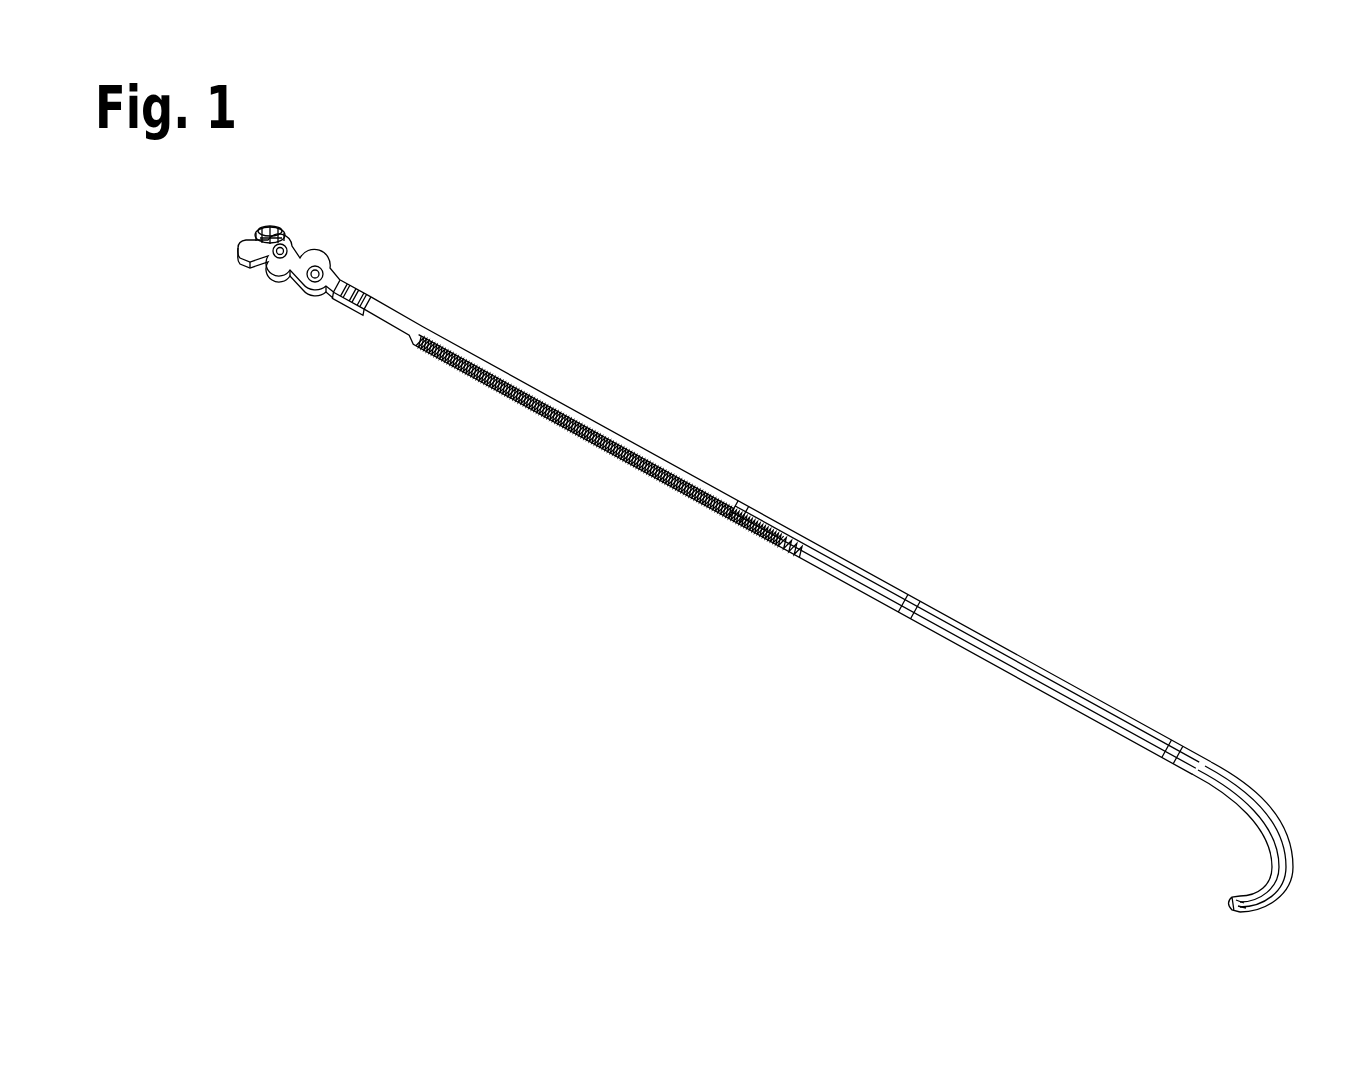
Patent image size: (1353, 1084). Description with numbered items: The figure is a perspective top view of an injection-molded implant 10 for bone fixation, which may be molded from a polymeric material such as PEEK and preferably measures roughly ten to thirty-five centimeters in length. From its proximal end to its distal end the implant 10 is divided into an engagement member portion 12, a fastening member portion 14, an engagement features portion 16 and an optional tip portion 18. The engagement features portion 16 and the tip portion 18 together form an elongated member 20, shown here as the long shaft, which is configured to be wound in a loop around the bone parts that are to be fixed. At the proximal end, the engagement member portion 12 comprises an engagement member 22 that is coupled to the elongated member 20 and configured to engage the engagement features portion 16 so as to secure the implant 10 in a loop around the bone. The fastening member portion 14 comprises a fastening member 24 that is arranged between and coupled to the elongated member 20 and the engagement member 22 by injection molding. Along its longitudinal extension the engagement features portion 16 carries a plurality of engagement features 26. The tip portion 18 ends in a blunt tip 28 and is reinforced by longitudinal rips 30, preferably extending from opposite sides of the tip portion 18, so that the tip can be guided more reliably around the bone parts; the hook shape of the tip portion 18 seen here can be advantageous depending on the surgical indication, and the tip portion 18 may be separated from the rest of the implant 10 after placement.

The implant 10 is at (1213, 216).
The engagement member portion 12 is at (275, 231).
The fastening member portion 14 is at (328, 253).
The engagement features portion 16 is at (795, 521).
The tip portion 18 is at (1256, 786).
The elongated member 20 is at (1273, 612).
The engagement member 22 is at (247, 262).
The fastening member 24 is at (310, 296).
The engagement features 26 is at (613, 452).
The blunt tip 28 is at (1225, 905).
The longitudinal rips 30 is at (1262, 818).